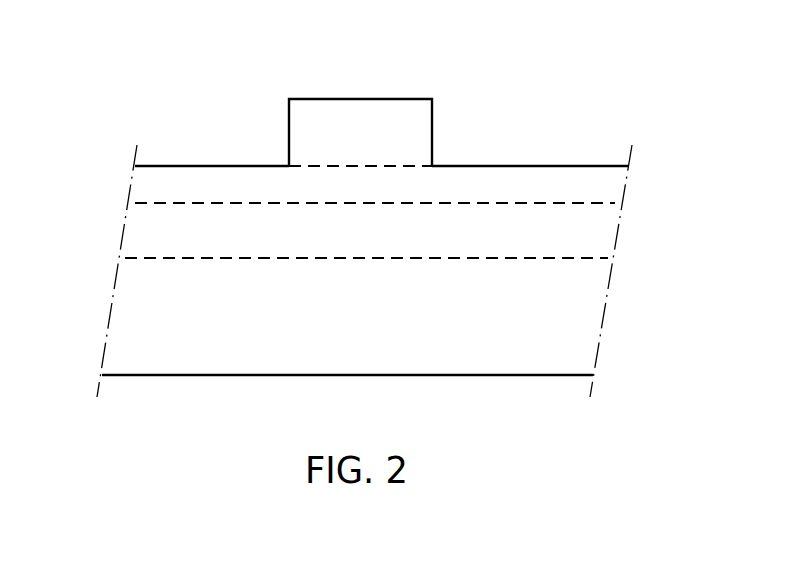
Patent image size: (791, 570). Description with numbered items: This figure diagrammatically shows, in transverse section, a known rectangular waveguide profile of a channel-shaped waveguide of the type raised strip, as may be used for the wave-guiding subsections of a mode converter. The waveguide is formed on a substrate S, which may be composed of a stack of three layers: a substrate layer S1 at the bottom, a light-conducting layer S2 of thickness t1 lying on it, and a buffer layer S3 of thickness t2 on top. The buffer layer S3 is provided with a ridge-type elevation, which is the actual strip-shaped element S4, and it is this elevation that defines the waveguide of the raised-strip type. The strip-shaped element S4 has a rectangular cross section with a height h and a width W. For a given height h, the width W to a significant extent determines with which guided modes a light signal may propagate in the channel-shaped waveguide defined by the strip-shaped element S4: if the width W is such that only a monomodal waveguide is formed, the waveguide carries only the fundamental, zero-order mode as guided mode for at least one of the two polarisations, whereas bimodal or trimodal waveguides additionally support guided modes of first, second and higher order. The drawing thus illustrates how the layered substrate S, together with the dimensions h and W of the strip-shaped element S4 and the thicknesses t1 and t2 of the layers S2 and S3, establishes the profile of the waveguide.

The substrate layer S1 is at (155, 287).
The light-conducting layer S2 is at (160, 230).
The buffer layer S3 is at (160, 193).
The strip-shaped element S4 is at (328, 138).
The substrate S is at (635, 165).
The width W is at (432, 97).
The height h is at (438, 99).
The thickness of light-conducting layer t1 is at (473, 203).
The thickness of buffer layer t2 is at (473, 166).